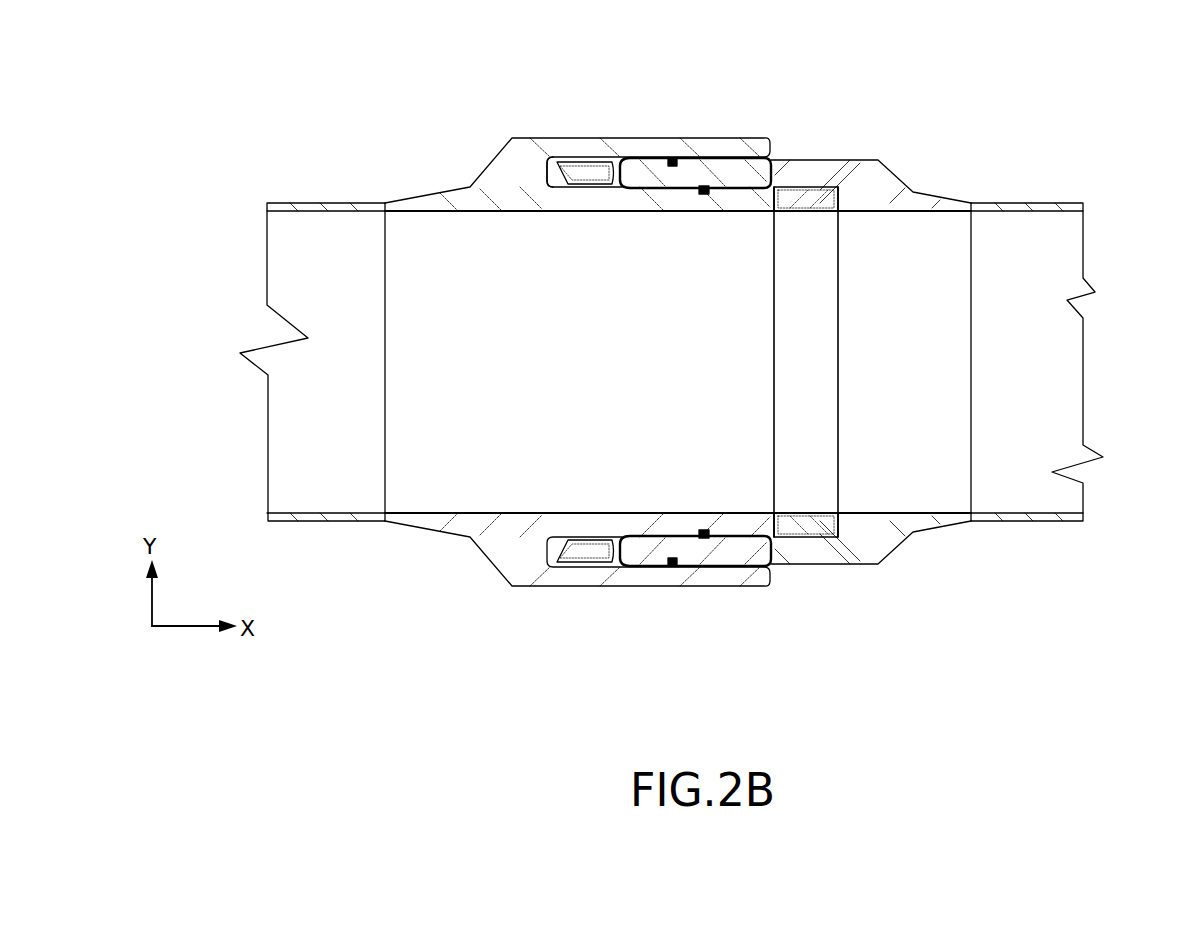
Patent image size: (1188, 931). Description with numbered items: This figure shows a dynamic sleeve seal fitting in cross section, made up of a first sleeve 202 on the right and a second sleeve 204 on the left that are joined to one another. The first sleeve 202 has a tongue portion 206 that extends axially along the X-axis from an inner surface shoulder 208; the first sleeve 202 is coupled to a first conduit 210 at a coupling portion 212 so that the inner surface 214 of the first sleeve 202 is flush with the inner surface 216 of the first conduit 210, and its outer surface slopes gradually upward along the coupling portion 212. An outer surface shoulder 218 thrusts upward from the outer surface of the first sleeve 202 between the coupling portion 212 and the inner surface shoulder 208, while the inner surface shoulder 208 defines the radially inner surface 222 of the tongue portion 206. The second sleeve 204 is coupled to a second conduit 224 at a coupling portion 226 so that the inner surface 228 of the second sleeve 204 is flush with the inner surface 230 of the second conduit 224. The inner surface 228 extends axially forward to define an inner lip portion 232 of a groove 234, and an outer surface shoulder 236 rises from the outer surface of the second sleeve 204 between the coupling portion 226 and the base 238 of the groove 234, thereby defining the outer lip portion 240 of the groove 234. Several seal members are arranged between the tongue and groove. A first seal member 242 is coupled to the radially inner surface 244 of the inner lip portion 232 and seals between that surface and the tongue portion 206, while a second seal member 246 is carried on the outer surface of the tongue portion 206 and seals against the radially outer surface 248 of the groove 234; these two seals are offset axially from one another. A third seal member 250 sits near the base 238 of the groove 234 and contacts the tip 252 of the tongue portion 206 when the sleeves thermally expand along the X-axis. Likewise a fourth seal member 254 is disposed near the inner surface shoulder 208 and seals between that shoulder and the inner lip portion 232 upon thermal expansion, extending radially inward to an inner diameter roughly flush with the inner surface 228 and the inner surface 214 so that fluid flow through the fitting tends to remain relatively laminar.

The first sleeve 202 is at (908, 295).
The second sleeve 204 is at (485, 70).
The tongue portion 206 is at (782, 170).
The inner surface shoulder 208 is at (842, 198).
The first conduit 210 is at (1063, 201).
The coupling portion 212 is at (945, 198).
The inner surface 214 is at (950, 372).
The inner surface 216 is at (1055, 333).
The outer surface shoulder 218 is at (900, 177).
The radially inner surface 222 is at (815, 184).
The second conduit 224 is at (292, 201).
The coupling portion 226 is at (408, 198).
The inner surface 228 is at (415, 372).
The inner surface 230 is at (288, 385).
The inner lip portion 232 is at (745, 200).
The groove 234 is at (620, 212).
The outer surface shoulder 236 is at (497, 165).
The base 238 is at (560, 178).
The outer lip portion 240 is at (705, 157).
The first seal member 242 is at (697, 192).
The radially inner surface 244 is at (657, 191).
The second seal member 246 is at (672, 160).
The radially outer surface 248 is at (645, 157).
The third seal member 250 is at (568, 556).
The tip 252 is at (620, 562).
The fourth seal member 254 is at (815, 406).